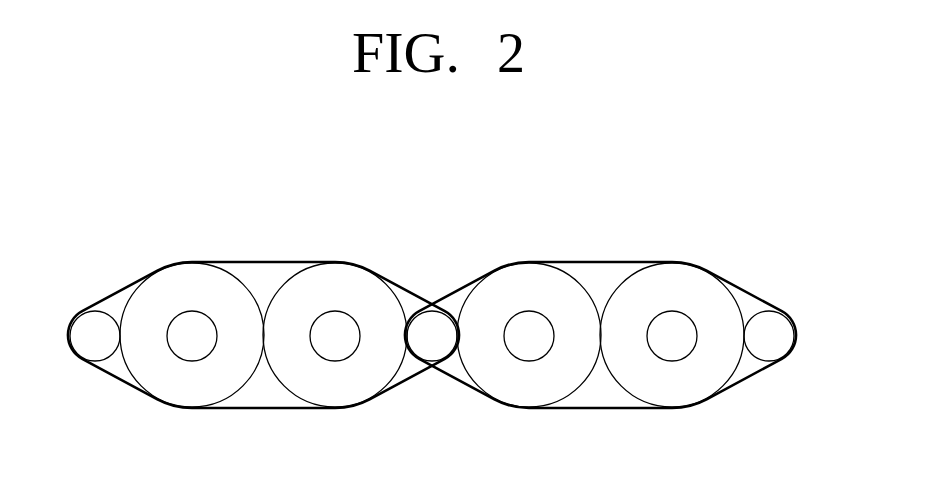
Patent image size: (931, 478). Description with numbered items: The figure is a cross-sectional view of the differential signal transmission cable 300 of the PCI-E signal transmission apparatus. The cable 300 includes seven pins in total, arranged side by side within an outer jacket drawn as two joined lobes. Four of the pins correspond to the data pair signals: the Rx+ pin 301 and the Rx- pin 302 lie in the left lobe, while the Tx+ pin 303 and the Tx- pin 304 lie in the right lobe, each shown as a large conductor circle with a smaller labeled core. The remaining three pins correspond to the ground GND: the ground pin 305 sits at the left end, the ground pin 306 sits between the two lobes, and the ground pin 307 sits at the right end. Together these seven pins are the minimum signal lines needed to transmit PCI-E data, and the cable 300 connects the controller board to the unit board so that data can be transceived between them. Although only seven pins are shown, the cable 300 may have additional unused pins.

The differential signal transmission cable 300 is at (658, 237).
The Rx+ pin 301 is at (172, 408).
The Rx- pin 302 is at (333, 408).
The Tx+ pin 303 is at (510, 408).
The Tx- pin 304 is at (682, 408).
The ground pin 305 is at (77, 315).
The ground pin 306 is at (427, 303).
The ground pin 307 is at (783, 310).